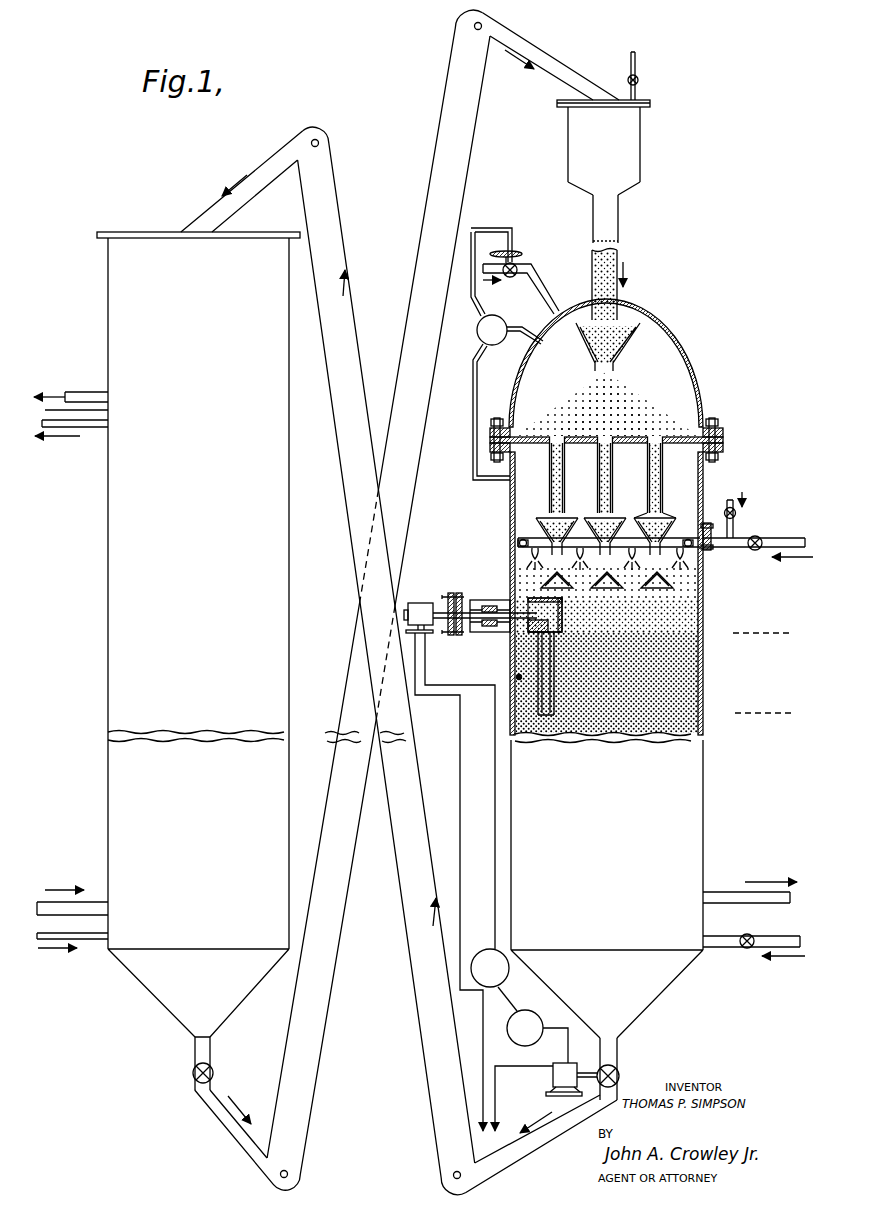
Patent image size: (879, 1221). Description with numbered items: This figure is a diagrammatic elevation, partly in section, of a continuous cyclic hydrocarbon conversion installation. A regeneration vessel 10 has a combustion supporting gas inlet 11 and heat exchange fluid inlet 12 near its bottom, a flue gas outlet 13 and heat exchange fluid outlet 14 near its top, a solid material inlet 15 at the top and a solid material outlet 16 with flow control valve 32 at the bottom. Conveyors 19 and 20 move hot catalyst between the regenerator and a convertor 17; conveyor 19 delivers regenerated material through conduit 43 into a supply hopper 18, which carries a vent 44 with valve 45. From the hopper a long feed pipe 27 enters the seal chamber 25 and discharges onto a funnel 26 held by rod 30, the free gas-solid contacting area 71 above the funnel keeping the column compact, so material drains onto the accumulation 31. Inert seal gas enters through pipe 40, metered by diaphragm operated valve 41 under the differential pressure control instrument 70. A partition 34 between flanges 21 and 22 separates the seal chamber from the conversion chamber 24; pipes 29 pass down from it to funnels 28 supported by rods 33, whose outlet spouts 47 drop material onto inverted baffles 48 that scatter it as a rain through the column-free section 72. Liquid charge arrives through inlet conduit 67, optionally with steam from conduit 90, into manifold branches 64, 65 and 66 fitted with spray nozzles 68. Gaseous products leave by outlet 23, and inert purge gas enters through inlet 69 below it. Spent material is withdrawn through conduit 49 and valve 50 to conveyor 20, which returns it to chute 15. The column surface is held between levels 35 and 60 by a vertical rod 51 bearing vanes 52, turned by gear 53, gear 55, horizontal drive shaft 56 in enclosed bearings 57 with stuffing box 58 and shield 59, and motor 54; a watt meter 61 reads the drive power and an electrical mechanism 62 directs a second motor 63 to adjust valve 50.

The regeneration vessel 10 is at (107, 577).
The combustion supporting gas inlet 11 is at (85, 899).
The heat exchange fluid inlet 12 is at (88, 941).
The flue gas outlet 13 is at (91, 429).
The heat exchange fluid outlet 14 is at (92, 391).
The solid material inlet 15 is at (215, 209).
The solid material outlet 16 is at (194, 1052).
The convertor 17 is at (704, 600).
The supply hopper 18 is at (567, 142).
The conveyor 19 is at (442, 155).
The conveyor 20 is at (334, 192).
The flange 21 is at (724, 432).
The flange 22 is at (724, 443).
The outlet 23 is at (727, 890).
The conversion chamber 24 is at (682, 682).
The seal chamber 25 is at (701, 372).
The funnel 26 is at (637, 343).
The feed pipe 27 is at (592, 223).
The funnel 28 is at (540, 527).
The pipes 29 is at (566, 479).
The rod 30 is at (640, 309).
The accumulation 31 is at (684, 409).
The flow control valve 32 is at (192, 1074).
The rods 33 is at (668, 520).
The partition 34 is at (725, 439).
The level 35 is at (762, 633).
The pipe 40 is at (548, 290).
The diaphragm operated valve 41 is at (517, 265).
The conduit 43 is at (551, 58).
The vent 44 is at (637, 75).
The valve 45 is at (639, 83).
The outlet spout 47 is at (520, 539).
The inverted baffle 48 is at (590, 591).
The contact material withdrawal conduit 49 is at (616, 1048).
The flow control valve 50 is at (618, 1070).
The vertical rod 51 is at (540, 661).
The vanes 52 is at (517, 678).
The gear 53 is at (536, 633).
The motor 54 is at (421, 603).
The gear 55 is at (520, 604).
The horizontal drive shaft 56 is at (435, 610).
The enclosed bearings 57 is at (479, 612).
The stuffing box 58 is at (461, 636).
The shield 59 is at (533, 597).
The level 60 is at (764, 713).
The watt meter 61 is at (494, 980).
The electrical mechanism 62 is at (537, 1036).
The second motor 63 is at (551, 1083).
The branch 64 is at (686, 539).
The branch 65 is at (704, 520).
The branch 66 is at (518, 545).
The inlet conduit 67 is at (776, 537).
The spray nozzles 68 is at (530, 553).
The inert gas inlet 69 is at (776, 935).
The differential pressure control instrument 70 is at (480, 332).
The gas-solid contacting area 71 is at (587, 312).
The column-free section 72 is at (668, 610).
The conduit 90 is at (742, 531).